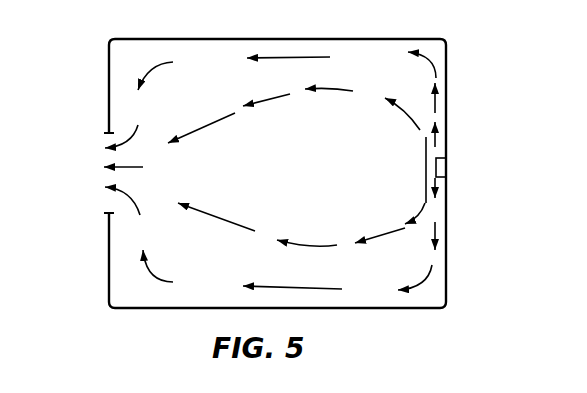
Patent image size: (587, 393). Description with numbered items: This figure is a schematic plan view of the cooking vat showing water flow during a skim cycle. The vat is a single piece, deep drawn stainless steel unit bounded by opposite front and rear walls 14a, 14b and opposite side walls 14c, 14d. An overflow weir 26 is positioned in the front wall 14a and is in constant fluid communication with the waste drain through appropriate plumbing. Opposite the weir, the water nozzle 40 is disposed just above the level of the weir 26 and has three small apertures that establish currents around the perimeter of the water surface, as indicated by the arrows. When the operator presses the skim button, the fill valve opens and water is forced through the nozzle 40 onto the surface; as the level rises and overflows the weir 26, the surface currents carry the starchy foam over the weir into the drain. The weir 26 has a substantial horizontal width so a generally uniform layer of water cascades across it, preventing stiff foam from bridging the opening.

The front wall 14a is at (109, 78).
The rear wall 14b is at (447, 272).
The side wall 14c is at (350, 38).
The side wall 14d is at (365, 309).
The overflow weir 26 is at (102, 182).
The water nozzle 40 is at (447, 167).